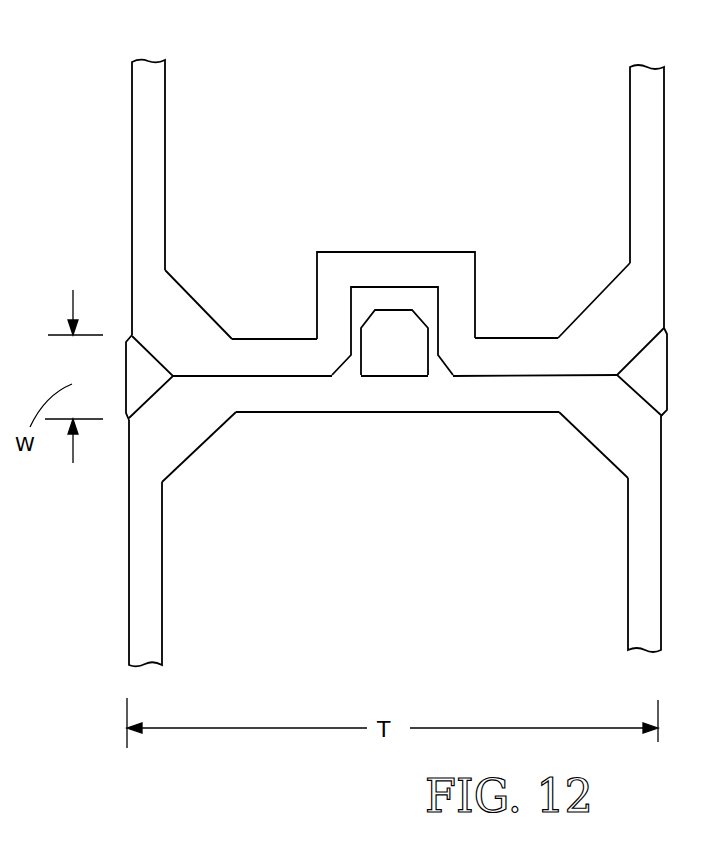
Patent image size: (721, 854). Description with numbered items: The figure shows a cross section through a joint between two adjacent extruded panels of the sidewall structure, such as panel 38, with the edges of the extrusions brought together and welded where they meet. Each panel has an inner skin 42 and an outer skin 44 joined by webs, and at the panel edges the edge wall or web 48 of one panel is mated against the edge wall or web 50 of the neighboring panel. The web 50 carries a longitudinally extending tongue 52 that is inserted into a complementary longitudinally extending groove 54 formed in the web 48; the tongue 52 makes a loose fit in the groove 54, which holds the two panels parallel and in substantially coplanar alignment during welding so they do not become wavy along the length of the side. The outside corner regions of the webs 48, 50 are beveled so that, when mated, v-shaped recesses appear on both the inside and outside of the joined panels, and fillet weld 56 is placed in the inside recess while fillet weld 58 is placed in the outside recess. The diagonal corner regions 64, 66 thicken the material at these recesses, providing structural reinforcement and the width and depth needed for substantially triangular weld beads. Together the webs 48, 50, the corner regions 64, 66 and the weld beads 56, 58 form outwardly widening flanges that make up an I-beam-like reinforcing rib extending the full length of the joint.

The panel 38 is at (208, 115).
The inner skin 42 is at (643, 120).
The outer skin 44 is at (160, 180).
The web 48 is at (275, 350).
The web 50 is at (483, 405).
The tongue 52 is at (413, 340).
The groove 54 is at (375, 298).
The fillet weld 56 is at (657, 362).
The fillet weld 58 is at (142, 357).
The diagonal corner region 64 is at (195, 328).
The diagonal corner region 66 is at (193, 430).